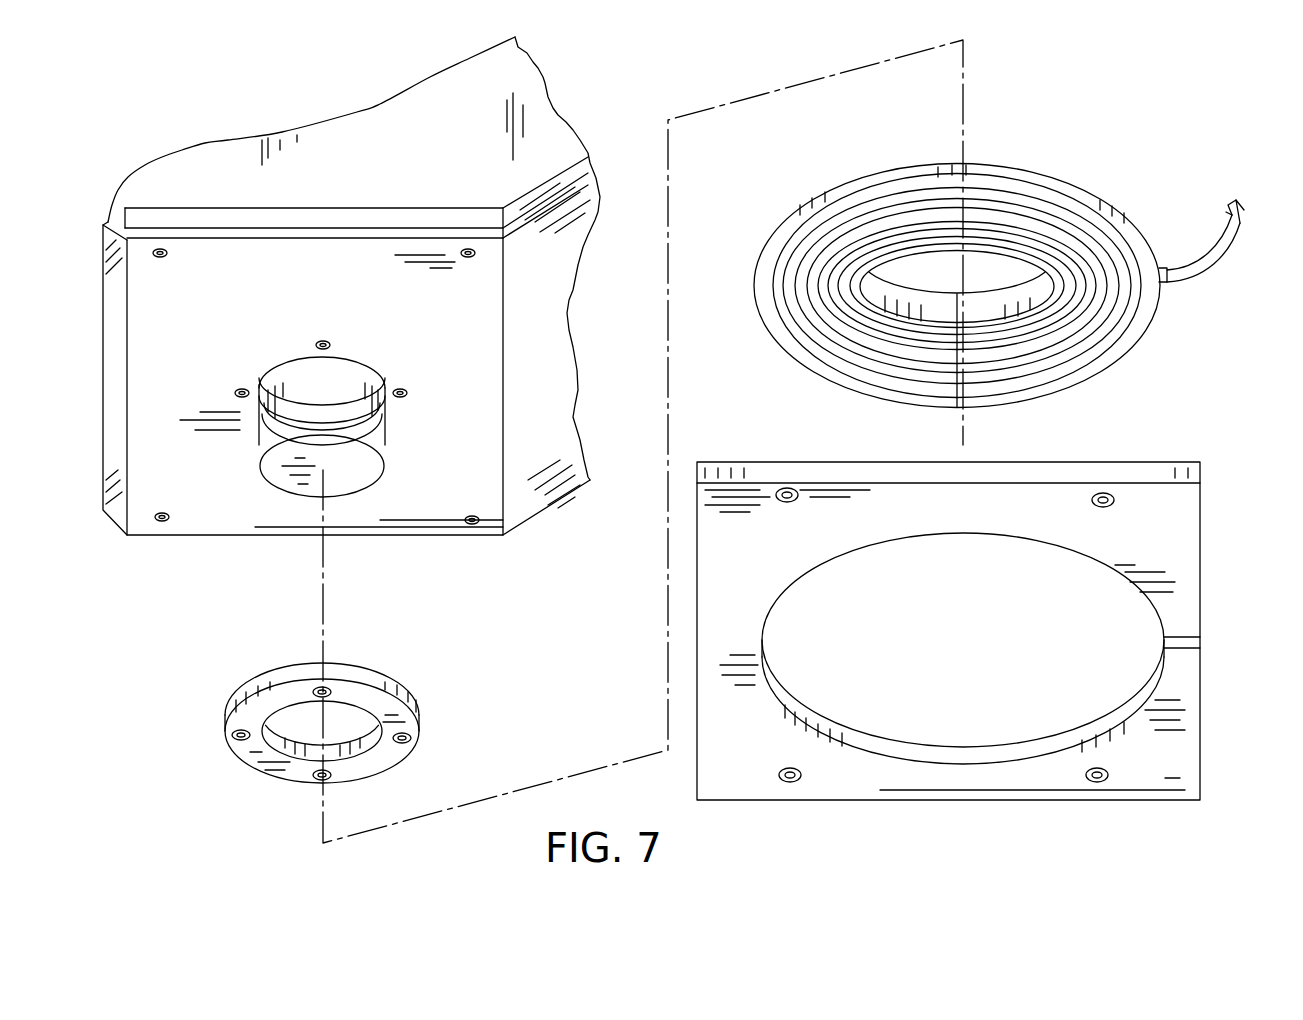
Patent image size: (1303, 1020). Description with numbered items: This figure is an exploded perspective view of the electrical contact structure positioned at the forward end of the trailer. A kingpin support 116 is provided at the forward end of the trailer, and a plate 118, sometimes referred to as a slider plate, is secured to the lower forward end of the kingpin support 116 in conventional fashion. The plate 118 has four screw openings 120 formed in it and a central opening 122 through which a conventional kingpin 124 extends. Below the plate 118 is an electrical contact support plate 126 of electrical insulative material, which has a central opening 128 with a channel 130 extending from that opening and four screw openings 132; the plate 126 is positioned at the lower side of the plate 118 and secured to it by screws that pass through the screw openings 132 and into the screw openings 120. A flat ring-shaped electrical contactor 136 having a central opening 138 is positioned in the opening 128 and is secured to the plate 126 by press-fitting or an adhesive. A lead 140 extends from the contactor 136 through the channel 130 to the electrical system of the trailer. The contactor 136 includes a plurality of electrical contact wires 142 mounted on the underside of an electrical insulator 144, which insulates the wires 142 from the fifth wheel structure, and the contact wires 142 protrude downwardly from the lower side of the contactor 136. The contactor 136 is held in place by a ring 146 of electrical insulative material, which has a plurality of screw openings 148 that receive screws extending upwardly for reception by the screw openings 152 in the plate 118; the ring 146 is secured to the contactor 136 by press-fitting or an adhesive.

The kingpin support 116 is at (295, 222).
The plate 118 is at (265, 527).
The screw openings 120 is at (468, 249).
The central opening 122 is at (365, 360).
The kingpin 124 is at (378, 402).
The electrical contact support plate 126 is at (979, 615).
The central opening 128 is at (1115, 570).
The channel 130 is at (1178, 642).
The screw openings 132 is at (1095, 777).
The electrical contactor 136 is at (1010, 243).
The central opening 138 is at (1023, 313).
The lead 140 is at (1220, 213).
The electrical contact wires 142 is at (1108, 313).
The electrical insulator 144 is at (915, 163).
The ring 146 is at (415, 698).
The screw openings 148 is at (407, 727).
The screw openings 152 is at (322, 342).